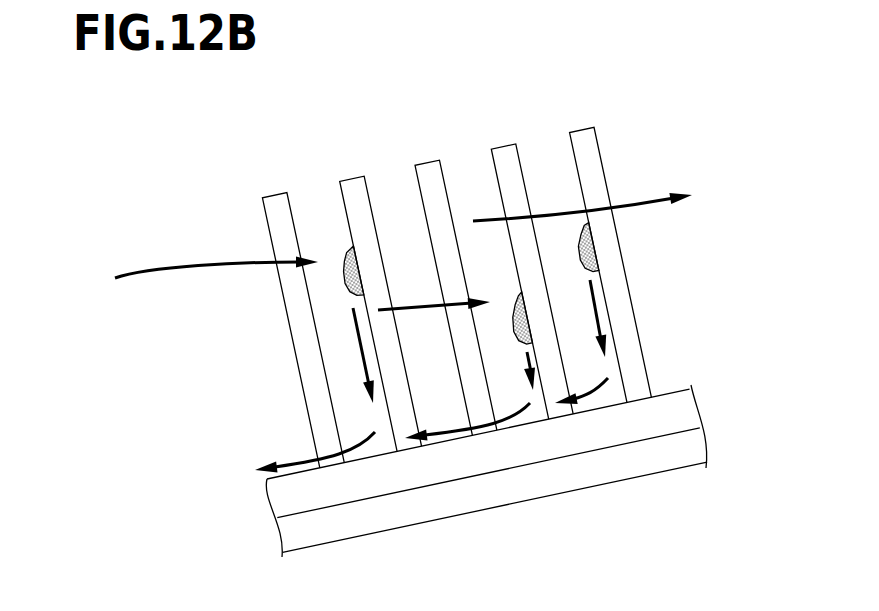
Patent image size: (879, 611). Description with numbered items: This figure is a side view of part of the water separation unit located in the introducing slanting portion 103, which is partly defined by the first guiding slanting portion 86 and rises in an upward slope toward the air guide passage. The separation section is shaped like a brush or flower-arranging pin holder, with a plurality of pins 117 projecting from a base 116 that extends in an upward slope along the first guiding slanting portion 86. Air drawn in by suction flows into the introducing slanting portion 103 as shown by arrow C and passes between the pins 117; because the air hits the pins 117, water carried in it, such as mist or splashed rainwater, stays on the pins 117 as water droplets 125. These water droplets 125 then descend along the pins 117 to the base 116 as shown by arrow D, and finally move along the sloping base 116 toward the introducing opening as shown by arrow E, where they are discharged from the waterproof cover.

The first guiding slanting portion 86 is at (612, 468).
The base 116 is at (455, 467).
The introducing slanting portion 103 is at (225, 218).
The pins 117 is at (430, 168).
The water droplets 125 is at (343, 281).
The arrow C is at (172, 265).
The arrow D is at (361, 345).
The arrow E is at (328, 457).